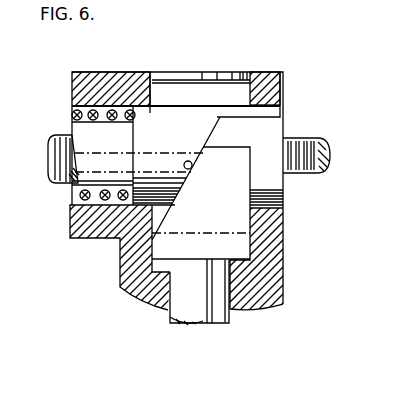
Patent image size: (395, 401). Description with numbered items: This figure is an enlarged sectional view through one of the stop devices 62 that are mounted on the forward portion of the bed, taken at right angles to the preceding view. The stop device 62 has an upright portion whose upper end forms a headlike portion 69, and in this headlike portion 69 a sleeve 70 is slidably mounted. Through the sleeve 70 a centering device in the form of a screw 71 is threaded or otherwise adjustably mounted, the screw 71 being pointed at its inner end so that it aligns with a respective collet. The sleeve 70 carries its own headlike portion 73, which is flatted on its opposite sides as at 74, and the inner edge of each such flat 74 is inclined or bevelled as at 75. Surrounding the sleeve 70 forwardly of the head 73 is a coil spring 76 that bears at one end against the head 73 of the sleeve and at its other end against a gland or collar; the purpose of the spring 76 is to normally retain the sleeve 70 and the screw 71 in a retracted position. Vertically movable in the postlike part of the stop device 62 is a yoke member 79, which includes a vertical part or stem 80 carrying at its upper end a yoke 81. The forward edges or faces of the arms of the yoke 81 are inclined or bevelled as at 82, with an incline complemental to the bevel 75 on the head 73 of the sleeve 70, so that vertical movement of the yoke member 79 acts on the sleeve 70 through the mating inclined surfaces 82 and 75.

The stop device 62 is at (210, 54).
The headlike portion 69 is at (118, 87).
The sleeve 70 is at (85, 133).
The screw 71 is at (316, 137).
The headlike portion of sleeve 73 is at (159, 155).
The flat 74 is at (264, 139).
The bevel 75 is at (210, 135).
The coil spring 76 is at (90, 79).
The yoke member 79 is at (161, 323).
The stem 80 is at (193, 297).
The yoke 81 is at (232, 178).
The bevel 82 is at (187, 178).